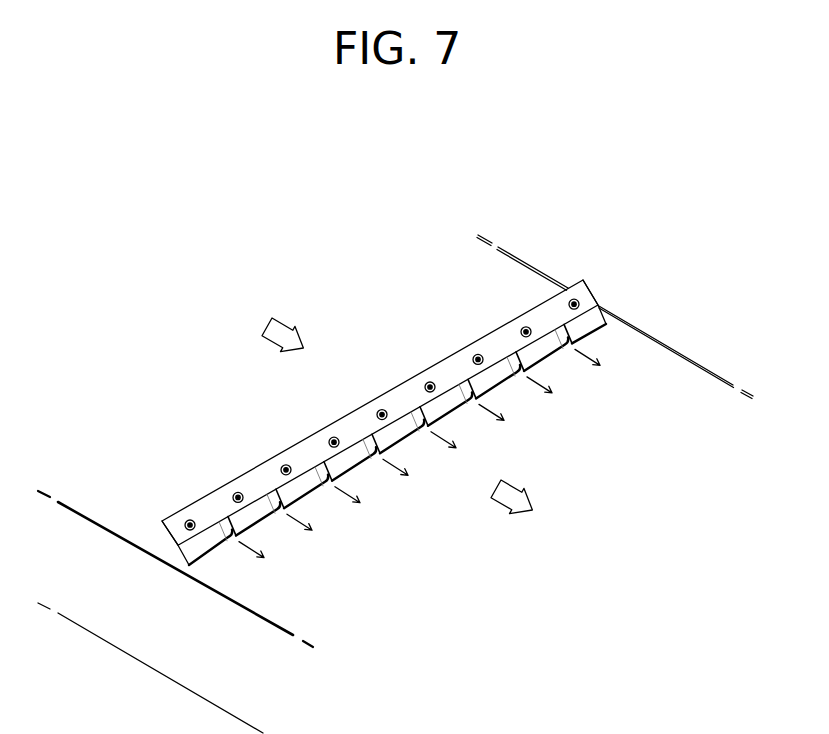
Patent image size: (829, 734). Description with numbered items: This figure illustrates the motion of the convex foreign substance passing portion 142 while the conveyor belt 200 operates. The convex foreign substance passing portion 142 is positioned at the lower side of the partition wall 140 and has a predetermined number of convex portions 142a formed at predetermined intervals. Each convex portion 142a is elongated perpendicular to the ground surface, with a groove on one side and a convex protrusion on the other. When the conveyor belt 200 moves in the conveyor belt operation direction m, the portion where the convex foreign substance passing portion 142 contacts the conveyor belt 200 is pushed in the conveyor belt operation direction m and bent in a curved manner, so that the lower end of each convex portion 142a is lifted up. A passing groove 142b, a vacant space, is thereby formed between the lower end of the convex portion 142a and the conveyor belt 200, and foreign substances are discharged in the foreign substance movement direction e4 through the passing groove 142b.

The partition wall 140 is at (265, 472).
The convex foreign substance passing portion 142 is at (397, 432).
The convex portion 142a is at (523, 371).
The passing groove 142b is at (377, 456).
The conveyor belt 200 is at (518, 293).
The foreign substance movement direction e4 is at (419, 453).
The conveyor belt operation direction m is at (397, 404).